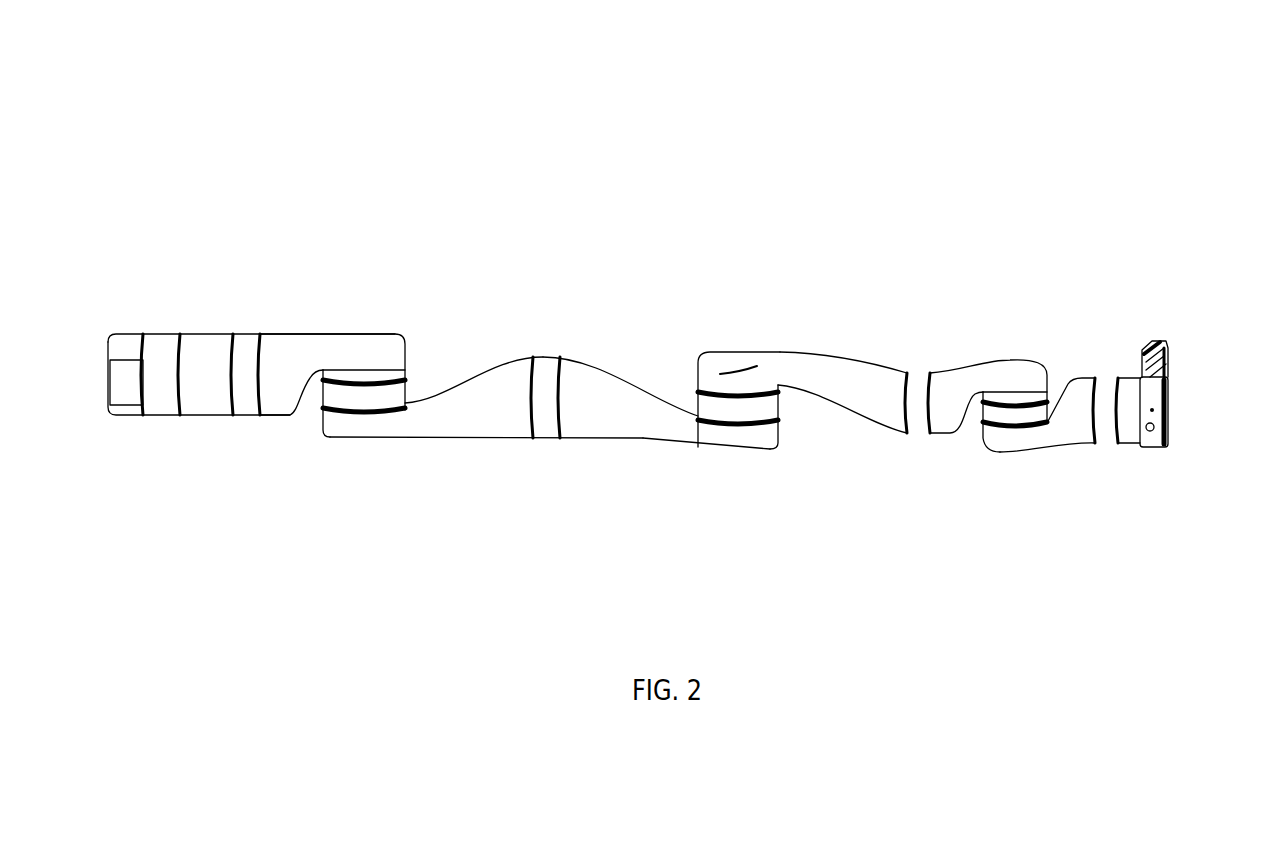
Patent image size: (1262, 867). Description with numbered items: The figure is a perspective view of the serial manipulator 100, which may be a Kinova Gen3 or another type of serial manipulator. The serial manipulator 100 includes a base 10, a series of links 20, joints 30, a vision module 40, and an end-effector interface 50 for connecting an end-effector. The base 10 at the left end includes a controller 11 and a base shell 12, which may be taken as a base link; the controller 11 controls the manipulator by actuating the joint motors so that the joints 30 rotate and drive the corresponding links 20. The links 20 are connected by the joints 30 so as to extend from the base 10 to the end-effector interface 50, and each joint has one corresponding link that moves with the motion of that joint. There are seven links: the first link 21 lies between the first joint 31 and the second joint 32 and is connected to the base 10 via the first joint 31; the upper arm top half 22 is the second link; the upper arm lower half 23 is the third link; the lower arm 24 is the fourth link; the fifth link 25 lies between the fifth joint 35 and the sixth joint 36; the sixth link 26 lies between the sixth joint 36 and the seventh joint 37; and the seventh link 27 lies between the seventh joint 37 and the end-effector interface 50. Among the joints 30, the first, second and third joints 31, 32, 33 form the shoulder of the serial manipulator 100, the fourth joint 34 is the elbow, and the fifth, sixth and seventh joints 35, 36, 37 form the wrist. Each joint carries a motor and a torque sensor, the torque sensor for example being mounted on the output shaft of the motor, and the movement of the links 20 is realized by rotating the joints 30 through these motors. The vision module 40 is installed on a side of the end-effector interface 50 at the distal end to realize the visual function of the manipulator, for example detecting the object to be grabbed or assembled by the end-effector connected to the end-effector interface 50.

The serial manipulator 100 is at (465, 99).
The base 10 is at (103, 247).
The controller 11 is at (130, 378).
The base shell 12 is at (205, 348).
The links 20 is at (603, 557).
The first link 21 is at (273, 410).
The upper arm top half 22 is at (500, 423).
The upper arm lower half 23 is at (627, 423).
The lower arm 24 is at (873, 413).
The fifth link 25 is at (948, 423).
The sixth link 26 is at (1017, 440).
The seventh link 27 is at (1133, 435).
The joints 30 is at (328, 247).
The first joint 31 is at (247, 348).
The second joint 32 is at (397, 390).
The third joint 33 is at (547, 370).
The fourth joint 34 is at (707, 410).
The fifth joint 35 is at (918, 380).
The sixth joint 36 is at (1037, 413).
The seventh joint 37 is at (1107, 390).
The vision module 40 is at (1170, 413).
The end-effector interface 50 is at (1170, 343).